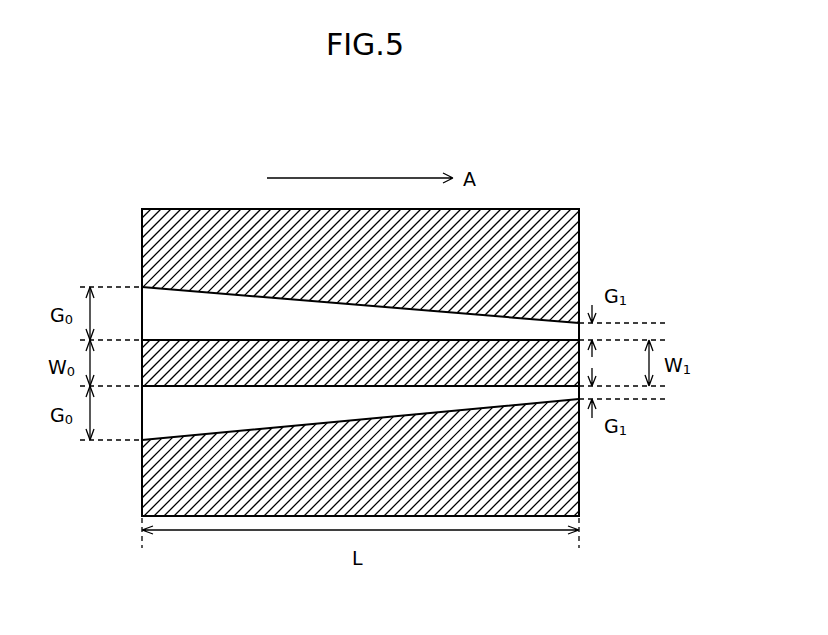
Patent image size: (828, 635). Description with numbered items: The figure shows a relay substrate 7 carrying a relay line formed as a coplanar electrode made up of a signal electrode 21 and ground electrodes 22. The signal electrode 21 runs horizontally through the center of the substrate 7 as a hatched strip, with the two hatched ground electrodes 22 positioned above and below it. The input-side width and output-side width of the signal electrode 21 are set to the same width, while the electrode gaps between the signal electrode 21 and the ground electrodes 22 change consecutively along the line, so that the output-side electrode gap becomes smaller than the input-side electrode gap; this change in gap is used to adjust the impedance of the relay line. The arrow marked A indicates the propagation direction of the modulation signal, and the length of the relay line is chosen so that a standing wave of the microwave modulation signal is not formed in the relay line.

The optical waveguide element 7 is at (543, 194).
The signal electrode 21 is at (460, 362).
The ground electrodes 22 is at (203, 245).